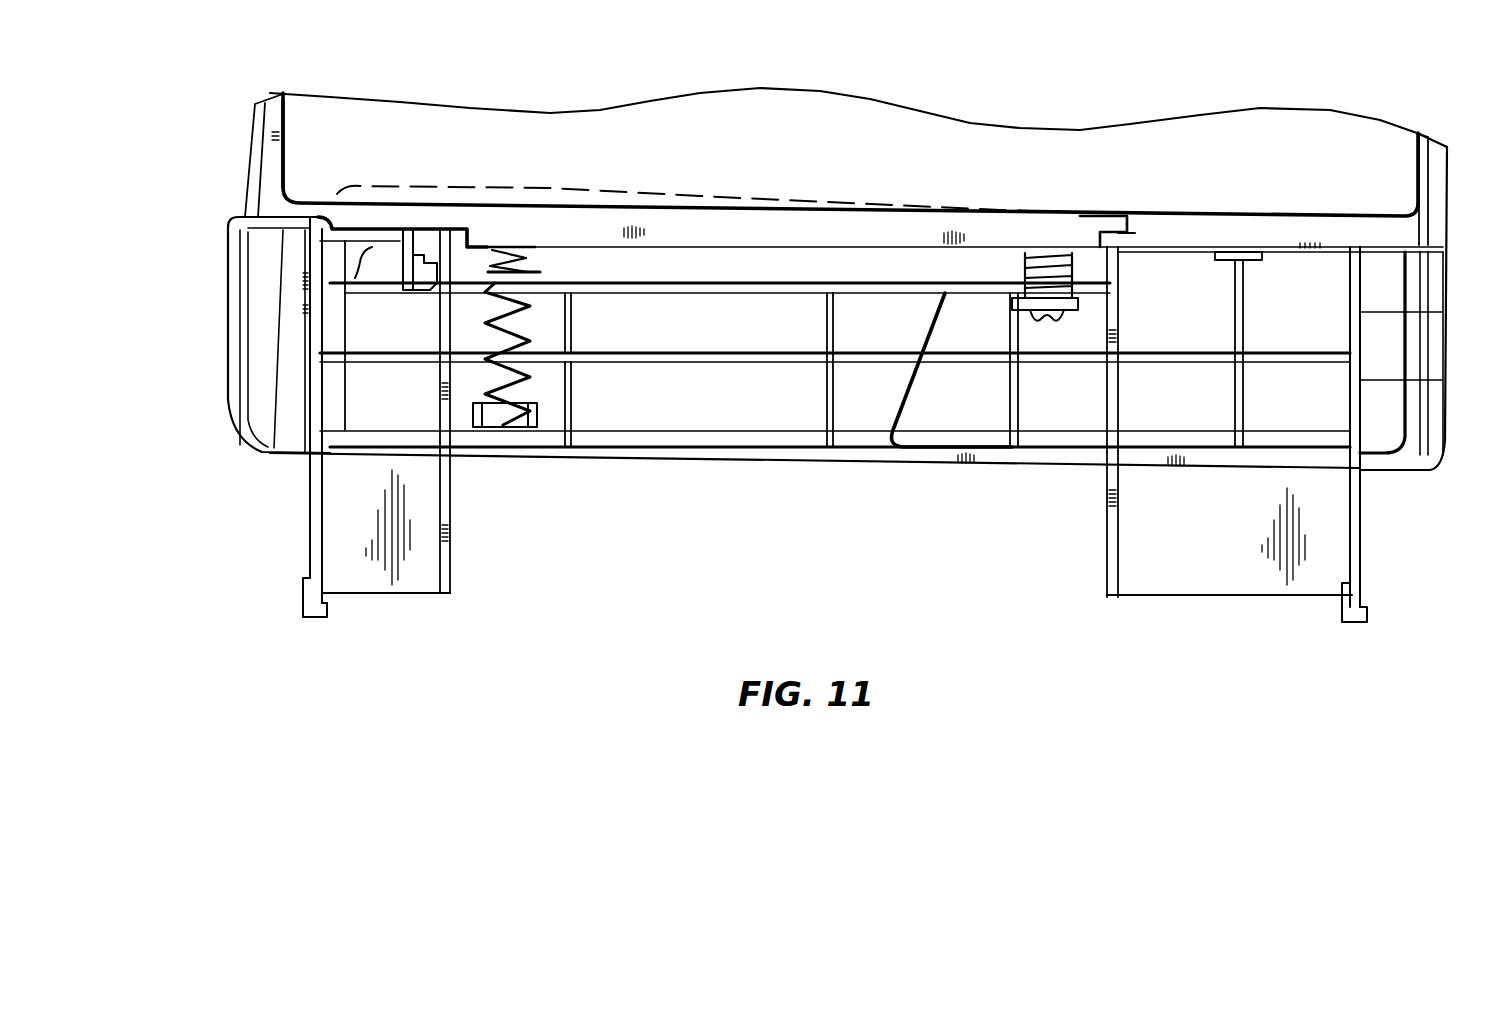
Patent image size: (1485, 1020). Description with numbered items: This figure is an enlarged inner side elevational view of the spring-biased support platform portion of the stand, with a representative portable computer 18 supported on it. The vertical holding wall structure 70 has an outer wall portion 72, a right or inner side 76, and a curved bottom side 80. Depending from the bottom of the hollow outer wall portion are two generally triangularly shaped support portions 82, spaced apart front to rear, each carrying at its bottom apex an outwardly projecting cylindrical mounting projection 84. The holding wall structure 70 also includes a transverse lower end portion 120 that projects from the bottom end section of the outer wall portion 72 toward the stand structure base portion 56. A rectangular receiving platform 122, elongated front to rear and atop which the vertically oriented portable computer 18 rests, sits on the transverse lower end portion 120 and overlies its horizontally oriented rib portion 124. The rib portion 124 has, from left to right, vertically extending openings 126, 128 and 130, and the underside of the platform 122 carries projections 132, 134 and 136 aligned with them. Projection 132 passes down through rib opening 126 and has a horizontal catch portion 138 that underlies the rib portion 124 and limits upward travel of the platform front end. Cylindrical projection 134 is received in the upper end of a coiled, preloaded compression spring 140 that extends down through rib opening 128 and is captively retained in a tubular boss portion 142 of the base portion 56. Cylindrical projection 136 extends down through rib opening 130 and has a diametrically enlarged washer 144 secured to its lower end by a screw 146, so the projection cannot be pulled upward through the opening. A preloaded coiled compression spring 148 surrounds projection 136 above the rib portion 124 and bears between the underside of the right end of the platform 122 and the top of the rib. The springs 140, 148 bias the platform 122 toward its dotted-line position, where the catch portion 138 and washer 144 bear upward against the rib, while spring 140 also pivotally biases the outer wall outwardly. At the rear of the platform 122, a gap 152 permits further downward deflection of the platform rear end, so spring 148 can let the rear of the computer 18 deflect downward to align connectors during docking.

The portable computer 18 is at (280, 163).
The stand structure base portion 56 is at (773, 470).
The vertical holding wall structure 70 is at (878, 94).
The outer wall portion 72 is at (250, 122).
The inner side 76 is at (1437, 165).
The curved bottom side 80 is at (237, 330).
The support portions 82 is at (310, 500).
The cylindrical mounting projection 84 is at (303, 597).
The transverse lower end portion 120 is at (240, 412).
The receiving platform 122 is at (760, 197).
The rib portion 124 is at (340, 247).
The rib opening 126 is at (363, 247).
The rib opening 128 is at (486, 285).
The rib opening 130 is at (1022, 310).
The projection 132 is at (415, 285).
The projection 134 is at (527, 250).
The projection 136 is at (1030, 262).
The catch portion 138 is at (420, 275).
The compression spring 140 is at (530, 375).
The tubular boss portion 142 is at (525, 428).
The washer 144 is at (1115, 330).
The screw 146 is at (1050, 322).
The compression spring 148 is at (1127, 252).
The gap 152 is at (362, 226).